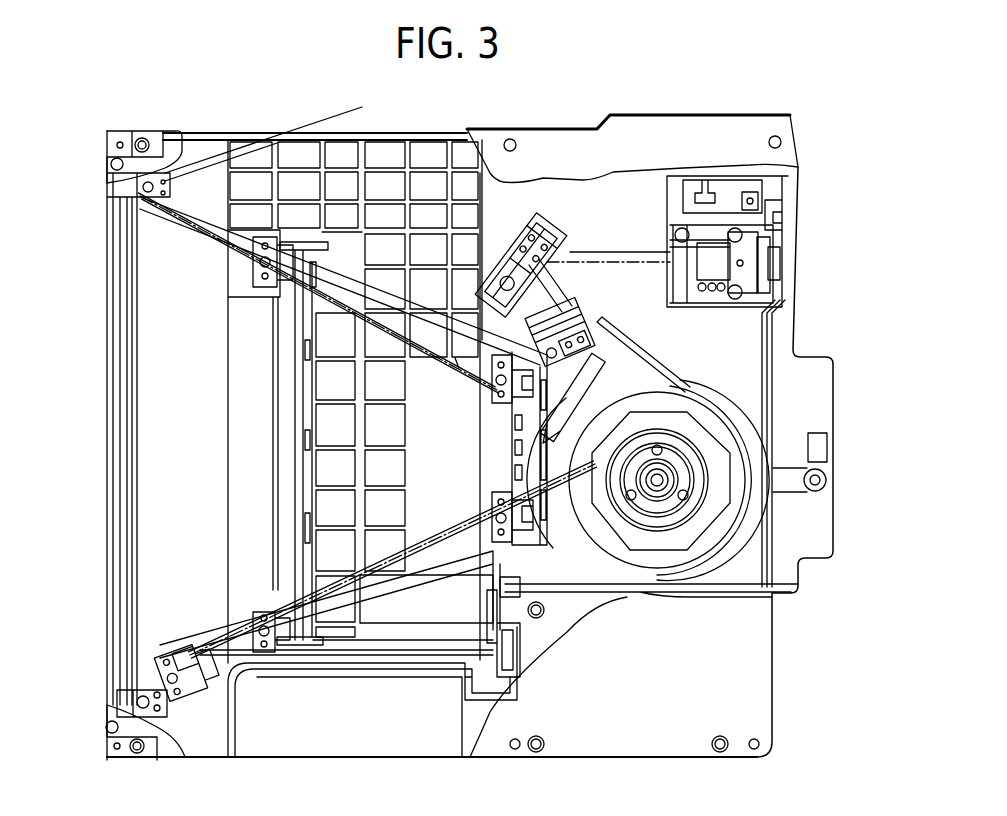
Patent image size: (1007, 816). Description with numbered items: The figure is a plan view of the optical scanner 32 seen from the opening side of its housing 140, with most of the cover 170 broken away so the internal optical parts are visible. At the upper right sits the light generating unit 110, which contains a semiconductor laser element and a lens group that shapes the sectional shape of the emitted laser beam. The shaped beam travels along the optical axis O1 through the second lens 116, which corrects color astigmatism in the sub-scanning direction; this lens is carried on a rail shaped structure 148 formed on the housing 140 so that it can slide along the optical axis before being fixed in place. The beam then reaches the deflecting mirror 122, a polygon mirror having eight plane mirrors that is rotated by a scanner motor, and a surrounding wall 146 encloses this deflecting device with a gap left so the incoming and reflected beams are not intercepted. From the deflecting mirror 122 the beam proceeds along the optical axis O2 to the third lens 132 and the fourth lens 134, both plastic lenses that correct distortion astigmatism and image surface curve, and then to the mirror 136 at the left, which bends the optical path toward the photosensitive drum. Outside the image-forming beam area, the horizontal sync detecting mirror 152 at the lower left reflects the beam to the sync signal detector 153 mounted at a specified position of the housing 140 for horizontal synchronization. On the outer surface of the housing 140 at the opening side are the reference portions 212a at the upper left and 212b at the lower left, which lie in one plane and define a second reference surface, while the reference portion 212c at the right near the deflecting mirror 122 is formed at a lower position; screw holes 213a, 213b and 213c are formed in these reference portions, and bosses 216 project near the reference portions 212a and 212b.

The optical scanner 32 is at (548, 112).
The light generating unit 110 is at (773, 242).
The second lens 116 is at (580, 322).
The deflecting mirror 122 is at (740, 492).
The third lens 132 is at (556, 470).
The fourth lens 134 is at (275, 522).
The mirror 136 is at (120, 552).
The housing 140 is at (785, 588).
The surrounding wall 146 is at (630, 342).
The rail shaped structure 148 is at (592, 356).
The horizontal sync detecting mirror 152 is at (167, 673).
The sync signal detector 153 is at (505, 665).
The cover 170 is at (752, 700).
The reference portion 212a is at (118, 133).
The reference portion 212b is at (117, 760).
The reference portion 212c is at (822, 474).
The screw hole 213a is at (110, 149).
The screw hole 213b is at (112, 745).
The screw hole 213c is at (825, 488).
The boss 216 is at (143, 136).
The optical axis O1 is at (571, 263).
The optical axis O2 is at (456, 368).